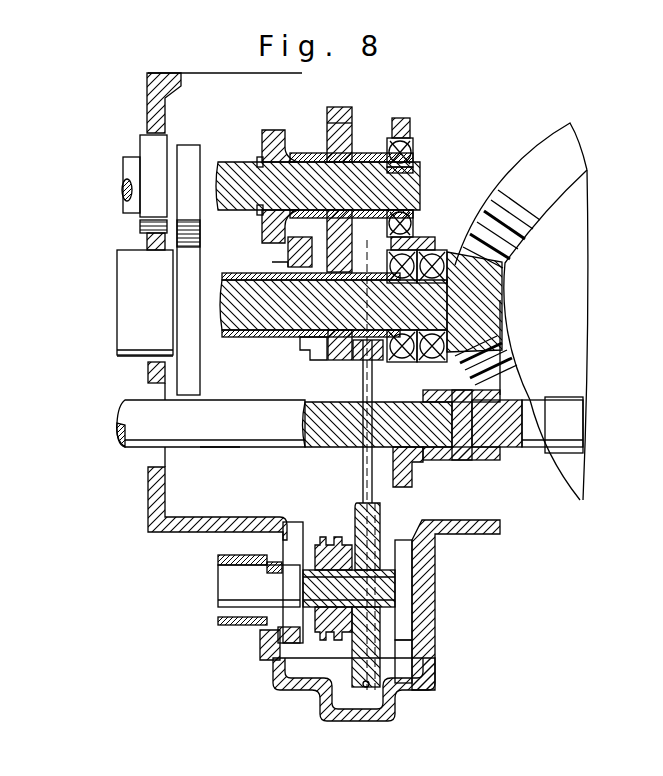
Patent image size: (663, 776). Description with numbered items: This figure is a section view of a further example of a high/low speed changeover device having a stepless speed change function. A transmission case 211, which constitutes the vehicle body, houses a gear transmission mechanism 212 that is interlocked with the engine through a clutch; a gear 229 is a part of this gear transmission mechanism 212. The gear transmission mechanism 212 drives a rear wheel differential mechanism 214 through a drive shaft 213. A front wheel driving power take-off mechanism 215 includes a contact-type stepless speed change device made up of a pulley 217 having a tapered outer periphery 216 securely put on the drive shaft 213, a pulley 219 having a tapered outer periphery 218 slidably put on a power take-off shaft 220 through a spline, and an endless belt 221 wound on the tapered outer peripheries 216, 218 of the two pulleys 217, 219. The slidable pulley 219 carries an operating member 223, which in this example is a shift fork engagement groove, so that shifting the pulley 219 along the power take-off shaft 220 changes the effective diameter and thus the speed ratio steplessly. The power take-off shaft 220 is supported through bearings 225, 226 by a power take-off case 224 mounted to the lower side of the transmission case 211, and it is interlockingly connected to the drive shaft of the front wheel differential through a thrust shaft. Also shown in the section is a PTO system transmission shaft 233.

The transmission case 211 is at (165, 522).
The gear transmission mechanism 212 is at (246, 150).
The drive shaft 213 is at (245, 318).
The rear wheel differential mechanism 214 is at (527, 162).
The front wheel driving power take-off mechanism 215 is at (315, 662).
The tapered outer periphery 216 is at (412, 227).
The pulley 217 is at (363, 350).
The tapered outer periphery 218 is at (365, 505).
The pulley 219 is at (383, 633).
The power take-off shaft 220 is at (228, 590).
The endless belt 221 is at (318, 456).
The operating member 223 is at (330, 535).
The power take-off case 224 is at (432, 583).
The bearing 225 is at (268, 625).
The bearing 226 is at (403, 568).
The gear 229 is at (315, 370).
The PTO system transmission shaft 233 is at (233, 442).